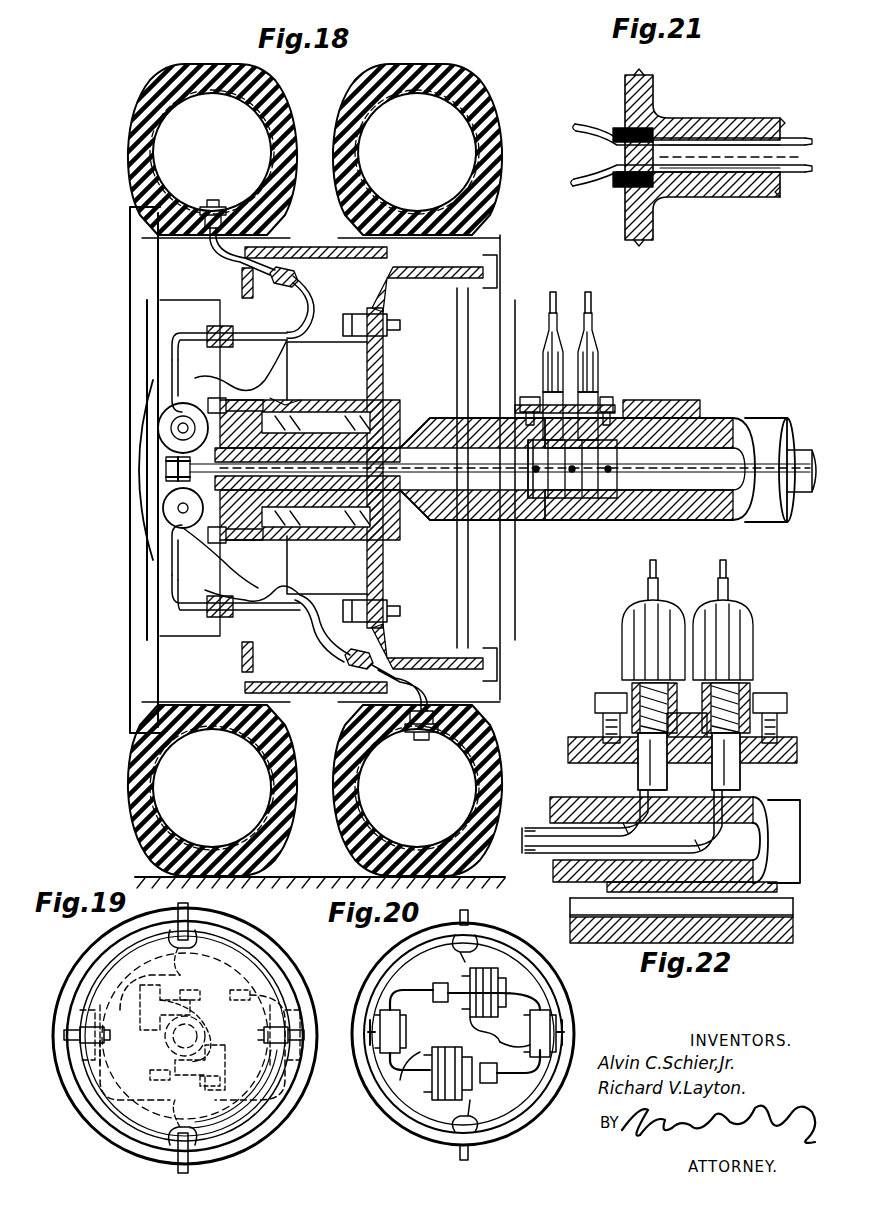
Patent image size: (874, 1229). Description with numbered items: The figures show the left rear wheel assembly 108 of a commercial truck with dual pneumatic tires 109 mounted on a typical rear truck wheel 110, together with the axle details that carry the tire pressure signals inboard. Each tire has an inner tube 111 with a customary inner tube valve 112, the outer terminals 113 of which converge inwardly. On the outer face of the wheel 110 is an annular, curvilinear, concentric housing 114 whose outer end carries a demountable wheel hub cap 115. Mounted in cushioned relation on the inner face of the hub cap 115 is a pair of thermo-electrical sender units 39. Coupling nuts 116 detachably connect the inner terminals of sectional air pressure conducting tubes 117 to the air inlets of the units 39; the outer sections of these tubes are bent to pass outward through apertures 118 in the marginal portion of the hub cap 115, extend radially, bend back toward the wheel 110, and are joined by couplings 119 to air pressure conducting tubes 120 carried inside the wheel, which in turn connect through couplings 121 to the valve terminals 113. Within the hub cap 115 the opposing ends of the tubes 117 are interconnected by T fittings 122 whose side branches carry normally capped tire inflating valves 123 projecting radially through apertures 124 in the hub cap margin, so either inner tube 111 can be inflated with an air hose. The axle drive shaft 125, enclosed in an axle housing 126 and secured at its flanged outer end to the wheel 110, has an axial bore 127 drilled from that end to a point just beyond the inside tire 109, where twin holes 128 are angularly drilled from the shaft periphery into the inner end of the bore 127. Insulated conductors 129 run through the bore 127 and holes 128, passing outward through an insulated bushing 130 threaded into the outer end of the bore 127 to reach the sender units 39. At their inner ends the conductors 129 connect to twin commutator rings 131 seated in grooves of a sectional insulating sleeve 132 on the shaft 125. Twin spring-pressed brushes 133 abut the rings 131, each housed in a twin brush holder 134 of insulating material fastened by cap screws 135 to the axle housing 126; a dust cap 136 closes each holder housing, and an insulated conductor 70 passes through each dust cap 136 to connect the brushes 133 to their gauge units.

In FIG. 18, the thermo-electrical sender unit 39 is at (165, 420).
In FIG. 19, the thermo-electrical sender unit 39 is at (178, 1022).
In FIG. 20, the thermo-electrical sender unit 39 is at (465, 1003).
In FIG. 18, the insulated conductor 70 is at (585, 300).
In FIG. 22, the insulated conductor 70 is at (648, 585).
In FIG. 18, the left rear wheel assembly 108 is at (128, 103).
In FIG. 18, the pneumatic tire 109 is at (360, 100).
In FIG. 18, the rear truck wheel 110 is at (288, 376).
In FIG. 18, the inner tube 111 is at (165, 130).
In FIG. 18, the inner tube valve 112 is at (218, 193).
In FIG. 18, the outer terminal of inner tube valve 113 is at (228, 252).
In FIG. 18, the housing 114 is at (245, 572).
In FIG. 19, the housing 114 is at (95, 1128).
In FIG. 18, the wheel hub cap 115 is at (160, 565).
In FIG. 19, the wheel hub cap 115 is at (265, 978).
In FIG. 20, the wheel hub cap 115 is at (492, 1125).
In FIG. 19, the coupling nut 116 is at (200, 990).
In FIG. 20, the coupling nut 116 is at (438, 984).
In FIG. 18, the sectional air pressure conducting tube 117 is at (170, 352).
In FIG. 19, the sectional air pressure conducting tube 117 is at (190, 908).
In FIG. 20, the sectional air pressure conducting tube 117 is at (400, 990).
In FIG. 19, the aperture 118 is at (165, 1128).
In FIG. 20, the aperture 118 is at (450, 950).
In FIG. 18, the coupling 119 is at (222, 326).
In FIG. 18, the air pressure conducting tube 120 is at (250, 372).
In FIG. 18, the coupling 121 is at (295, 276).
In FIG. 18, the T fitting 122 is at (165, 460).
In FIG. 19, the T fitting 122 is at (175, 1032).
In FIG. 20, the T fitting 122 is at (372, 1114).
In FIG. 19, the tire inflating valve 123 is at (85, 1060).
In FIG. 20, the tire inflating valve 123 is at (372, 1040).
In FIG. 19, the aperture 124 is at (92, 1025).
In FIG. 20, the aperture 124 is at (378, 1020).
In FIG. 18, the axle drive shaft 125 is at (700, 445).
In FIG. 21, the axle drive shaft 125 is at (725, 197).
In FIG. 22, the axle drive shaft 125 is at (768, 838).
In FIG. 18, the axle housing 126 is at (760, 432).
In FIG. 22, the axle housing 126 is at (625, 943).
In FIG. 18, the axial bore 127 is at (440, 494).
In FIG. 21, the axial bore 127 is at (708, 140).
In FIG. 22, the axial bore 127 is at (565, 797).
In FIG. 22, the twin holes 128 is at (623, 821).
In FIG. 18, the insulated conductor 129 is at (165, 474).
In FIG. 21, the insulated conductor 129 is at (580, 176).
In FIG. 22, the insulated conductor 129 is at (556, 885).
In FIG. 20, the insulated conductor 129 is at (515, 1054).
In FIG. 21, the insulated bushing 130 is at (613, 186).
In FIG. 18, the commutator ring 131 is at (590, 501).
In FIG. 22, the commutator ring 131 is at (715, 893).
In FIG. 18, the sectional insulating sleeve 132 is at (537, 501).
In FIG. 22, the sectional insulating sleeve 132 is at (681, 901).
In FIG. 18, the spring-pressed brush 133 is at (528, 430).
In FIG. 22, the spring-pressed brush 133 is at (638, 778).
In FIG. 18, the twin brush holder 134 is at (592, 405).
In FIG. 22, the twin brush holder 134 is at (632, 688).
In FIG. 18, the cap screw 135 is at (612, 395).
In FIG. 22, the cap screw 135 is at (594, 702).
In FIG. 18, the dust cap 136 is at (543, 365).
In FIG. 22, the dust cap 136 is at (625, 628).